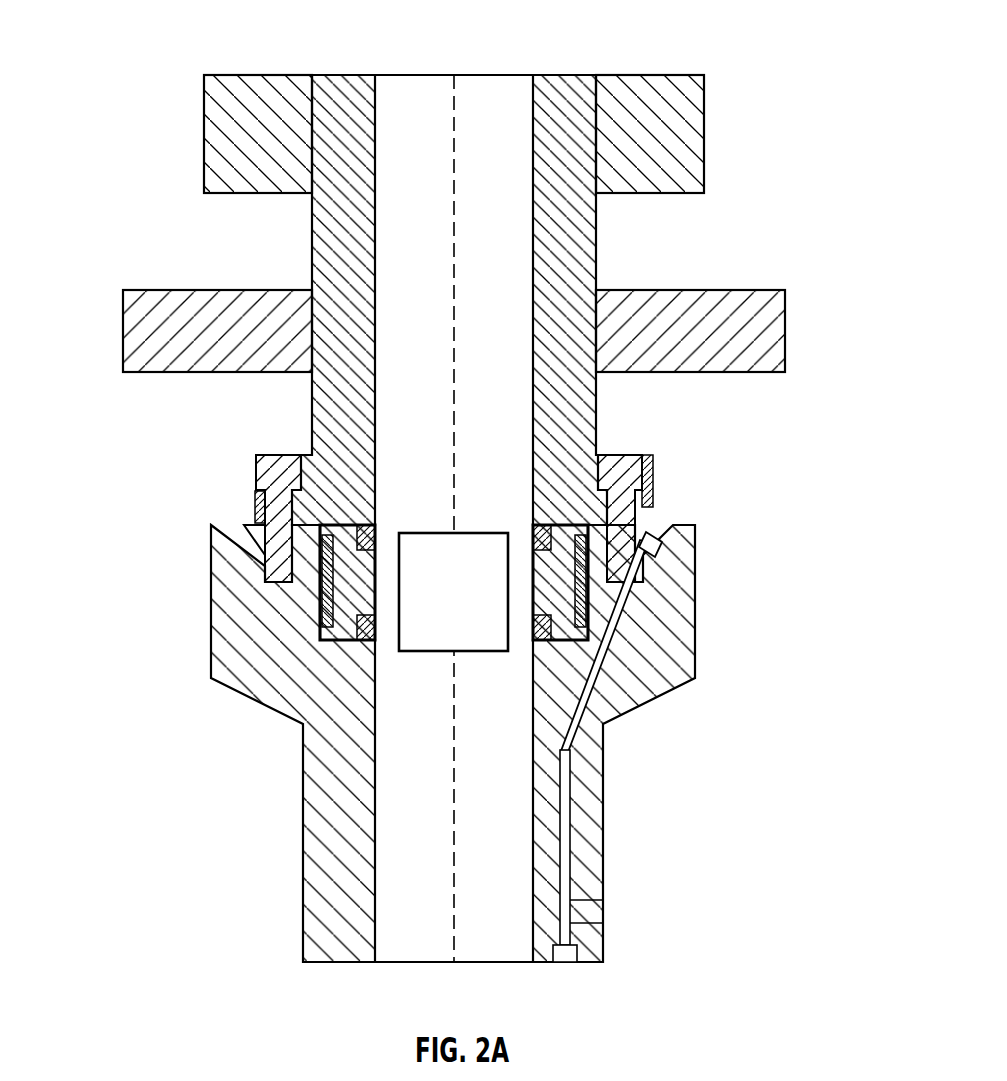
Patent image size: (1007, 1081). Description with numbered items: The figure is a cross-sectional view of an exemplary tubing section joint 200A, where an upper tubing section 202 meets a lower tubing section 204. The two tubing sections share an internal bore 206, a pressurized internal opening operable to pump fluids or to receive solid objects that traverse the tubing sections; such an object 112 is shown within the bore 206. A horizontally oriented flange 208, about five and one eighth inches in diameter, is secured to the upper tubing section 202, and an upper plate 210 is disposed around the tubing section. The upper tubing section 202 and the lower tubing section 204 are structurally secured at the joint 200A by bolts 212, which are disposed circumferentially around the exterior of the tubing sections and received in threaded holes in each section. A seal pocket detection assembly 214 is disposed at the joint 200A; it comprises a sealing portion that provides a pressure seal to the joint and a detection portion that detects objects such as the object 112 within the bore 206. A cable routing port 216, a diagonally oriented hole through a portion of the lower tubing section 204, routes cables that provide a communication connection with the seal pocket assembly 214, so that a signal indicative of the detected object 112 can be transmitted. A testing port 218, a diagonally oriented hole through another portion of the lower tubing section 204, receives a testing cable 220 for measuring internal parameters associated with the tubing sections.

The tubing section joint 200A is at (128, 405).
The upper tubing section 202 is at (312, 262).
The lower tubing section 204 is at (211, 672).
The internal bore 206 is at (493, 88).
The flange 208 is at (704, 110).
The plate 210 is at (785, 337).
The bolt 212 is at (632, 455).
The seal pocket detection assembly 214 is at (588, 550).
The cable routing port 216 is at (239, 527).
The testing port 218 is at (657, 537).
The testing cable 220 is at (570, 885).
The object 112 is at (466, 533).